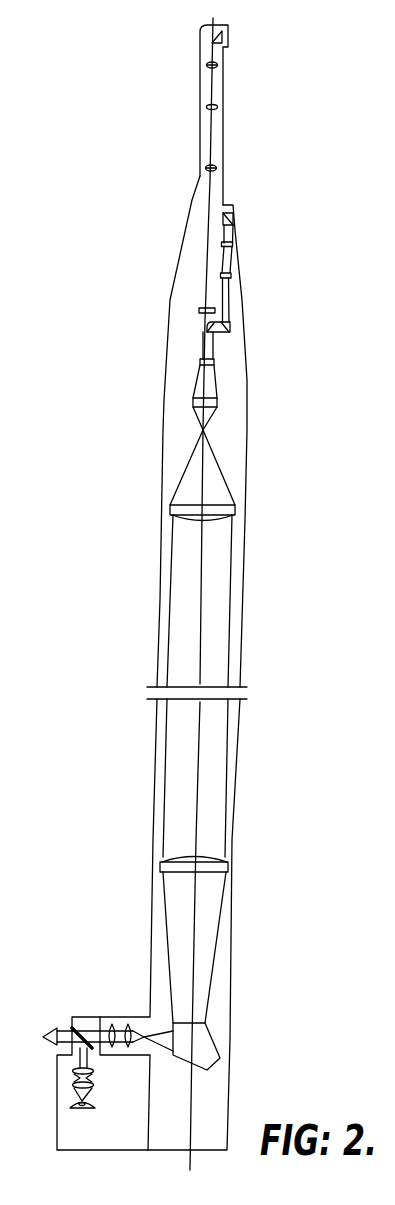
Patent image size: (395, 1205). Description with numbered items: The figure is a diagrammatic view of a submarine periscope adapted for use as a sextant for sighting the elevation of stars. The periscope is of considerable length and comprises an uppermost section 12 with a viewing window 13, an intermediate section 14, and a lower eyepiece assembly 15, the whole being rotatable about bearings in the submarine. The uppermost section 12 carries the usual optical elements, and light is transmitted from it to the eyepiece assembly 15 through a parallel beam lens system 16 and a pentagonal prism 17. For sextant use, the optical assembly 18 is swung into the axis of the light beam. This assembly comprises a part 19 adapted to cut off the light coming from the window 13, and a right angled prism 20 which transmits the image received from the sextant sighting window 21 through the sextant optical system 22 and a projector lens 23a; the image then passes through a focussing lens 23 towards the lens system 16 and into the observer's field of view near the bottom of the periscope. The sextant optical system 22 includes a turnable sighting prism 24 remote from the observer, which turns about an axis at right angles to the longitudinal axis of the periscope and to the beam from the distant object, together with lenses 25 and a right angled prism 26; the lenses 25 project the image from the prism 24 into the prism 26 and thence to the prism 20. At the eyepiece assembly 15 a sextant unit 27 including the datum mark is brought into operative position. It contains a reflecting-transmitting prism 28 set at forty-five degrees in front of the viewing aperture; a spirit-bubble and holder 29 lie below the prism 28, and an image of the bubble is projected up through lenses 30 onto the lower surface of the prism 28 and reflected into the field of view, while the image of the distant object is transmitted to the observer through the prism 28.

The uppermost section 12 is at (220, 126).
The viewing window 13 is at (228, 33).
The intermediate section 14 is at (243, 588).
The eyepiece assembly 15 is at (124, 1023).
The parallel beam lens system 16 is at (166, 856).
The pentagonal prism 17 is at (210, 1048).
The optical assembly 18 is at (212, 342).
The light cut-off part 19 is at (213, 309).
The right angled prism 20 is at (202, 329).
The sextant sighting window 21 is at (233, 222).
The sextant optical system 22 is at (232, 280).
The focussing lens 23 is at (214, 402).
The projector lens 23a is at (210, 360).
The turnable sighting prism 24 is at (227, 216).
The lenses 25 is at (235, 265).
The right angled prism 26 is at (230, 326).
The sextant unit 27 is at (67, 1096).
The reflecting-transmitting prism 28 is at (82, 1027).
The spirit-bubble and holder 29 is at (79, 1109).
The lenses 30 is at (72, 1070).